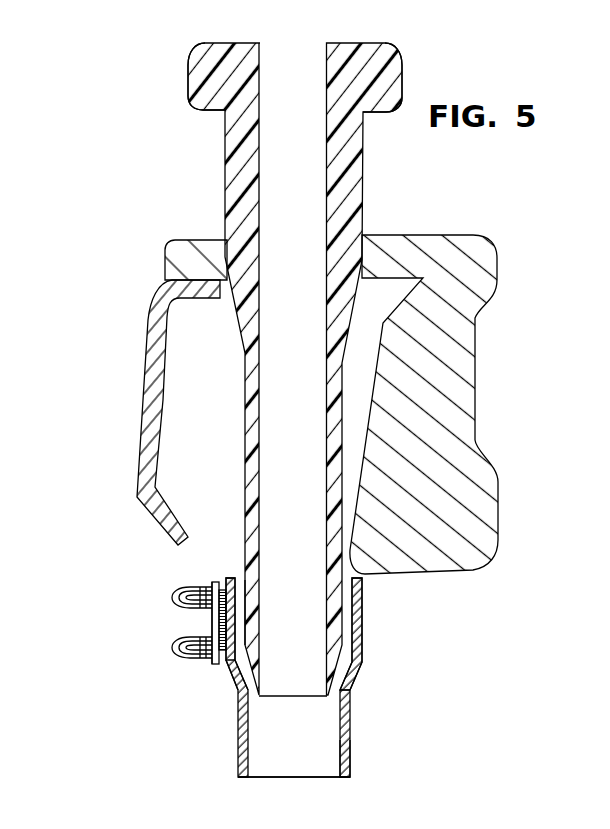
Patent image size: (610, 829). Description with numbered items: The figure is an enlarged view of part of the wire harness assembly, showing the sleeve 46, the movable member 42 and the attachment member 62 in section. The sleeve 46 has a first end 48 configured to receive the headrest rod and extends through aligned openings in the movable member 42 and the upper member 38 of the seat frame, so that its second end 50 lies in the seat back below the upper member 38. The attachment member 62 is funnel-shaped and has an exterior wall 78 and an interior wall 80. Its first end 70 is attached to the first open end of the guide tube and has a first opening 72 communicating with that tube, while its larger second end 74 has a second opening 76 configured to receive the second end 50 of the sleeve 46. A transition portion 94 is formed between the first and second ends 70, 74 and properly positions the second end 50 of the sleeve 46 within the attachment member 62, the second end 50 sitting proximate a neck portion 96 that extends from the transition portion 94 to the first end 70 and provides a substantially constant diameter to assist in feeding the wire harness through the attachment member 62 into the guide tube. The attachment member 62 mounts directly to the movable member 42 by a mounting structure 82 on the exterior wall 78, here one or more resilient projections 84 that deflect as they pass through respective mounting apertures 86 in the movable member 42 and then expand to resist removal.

The upper member 38 is at (158, 388).
The movable member 42 is at (447, 413).
The sleeve 46 is at (247, 176).
The first end 48 is at (228, 44).
The second end 50 is at (308, 692).
The attachment member 62 is at (381, 645).
The first end 70 is at (238, 780).
The first opening 72 is at (322, 779).
The second end 74 is at (227, 577).
The second opening 76 is at (240, 582).
The exterior wall 78 is at (230, 676).
The interior wall 80 is at (341, 672).
The mounting structure 82 is at (172, 614).
The projections 84 is at (181, 599).
The mounting apertures 86 is at (207, 614).
The transition portion 94 is at (237, 678).
The neck portion 96 is at (342, 763).